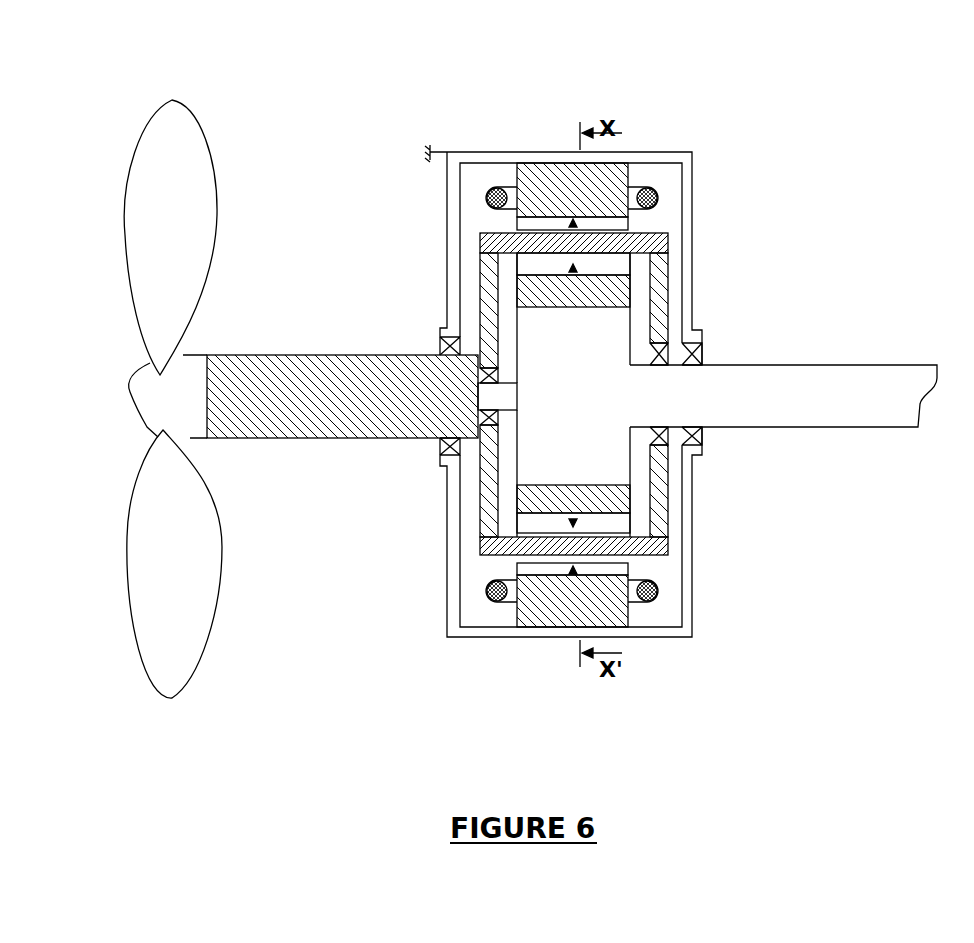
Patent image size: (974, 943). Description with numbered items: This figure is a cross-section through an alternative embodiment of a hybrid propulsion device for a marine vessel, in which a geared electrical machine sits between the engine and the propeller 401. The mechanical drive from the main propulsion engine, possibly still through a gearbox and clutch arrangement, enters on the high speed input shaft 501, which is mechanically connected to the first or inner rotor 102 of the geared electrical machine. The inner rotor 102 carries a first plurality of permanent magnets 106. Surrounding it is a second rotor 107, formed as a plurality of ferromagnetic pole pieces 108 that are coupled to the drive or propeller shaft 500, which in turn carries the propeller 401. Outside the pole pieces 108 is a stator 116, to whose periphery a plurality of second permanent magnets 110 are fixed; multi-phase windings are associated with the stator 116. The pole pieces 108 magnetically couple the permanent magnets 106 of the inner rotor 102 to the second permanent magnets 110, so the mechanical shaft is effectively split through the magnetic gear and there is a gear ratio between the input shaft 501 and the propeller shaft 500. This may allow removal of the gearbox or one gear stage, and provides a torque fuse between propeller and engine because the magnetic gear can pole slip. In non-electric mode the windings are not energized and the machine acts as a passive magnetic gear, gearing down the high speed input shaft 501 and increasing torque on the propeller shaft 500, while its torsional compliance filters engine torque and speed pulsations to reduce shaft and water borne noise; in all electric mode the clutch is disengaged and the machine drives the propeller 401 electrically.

The propeller 401 is at (175, 120).
The drive shaft 500 is at (327, 407).
The input shaft 501 is at (813, 408).
The stator 116 is at (538, 182).
The ferromagnetic pole pieces 108 is at (537, 545).
The first plurality of permanent magnets 106 is at (615, 270).
The second rotor 107 is at (662, 518).
The inner rotor 102 is at (612, 333).
The second permanent magnets 110 is at (603, 568).